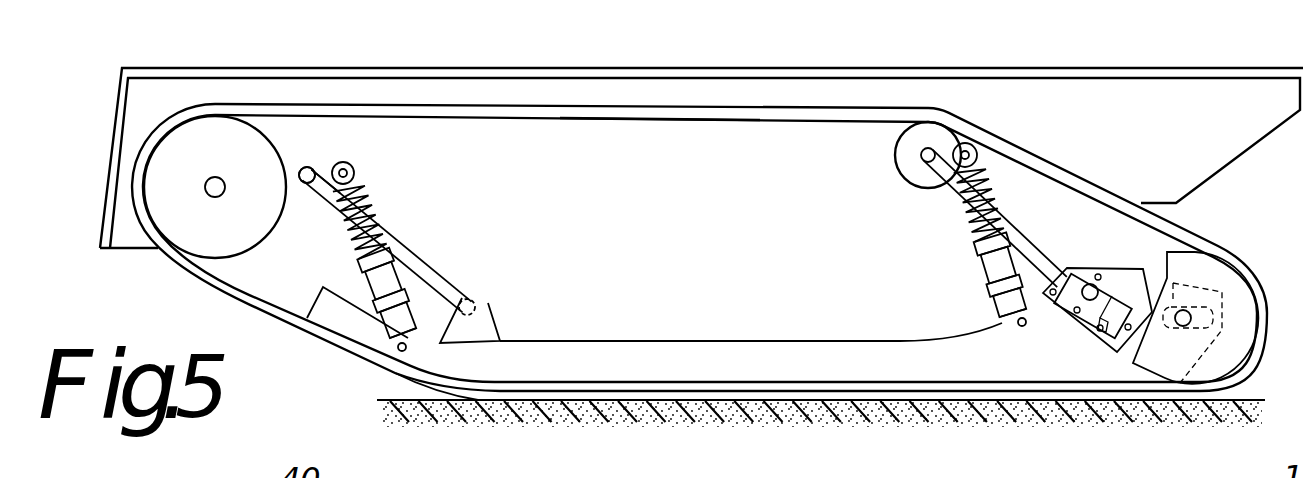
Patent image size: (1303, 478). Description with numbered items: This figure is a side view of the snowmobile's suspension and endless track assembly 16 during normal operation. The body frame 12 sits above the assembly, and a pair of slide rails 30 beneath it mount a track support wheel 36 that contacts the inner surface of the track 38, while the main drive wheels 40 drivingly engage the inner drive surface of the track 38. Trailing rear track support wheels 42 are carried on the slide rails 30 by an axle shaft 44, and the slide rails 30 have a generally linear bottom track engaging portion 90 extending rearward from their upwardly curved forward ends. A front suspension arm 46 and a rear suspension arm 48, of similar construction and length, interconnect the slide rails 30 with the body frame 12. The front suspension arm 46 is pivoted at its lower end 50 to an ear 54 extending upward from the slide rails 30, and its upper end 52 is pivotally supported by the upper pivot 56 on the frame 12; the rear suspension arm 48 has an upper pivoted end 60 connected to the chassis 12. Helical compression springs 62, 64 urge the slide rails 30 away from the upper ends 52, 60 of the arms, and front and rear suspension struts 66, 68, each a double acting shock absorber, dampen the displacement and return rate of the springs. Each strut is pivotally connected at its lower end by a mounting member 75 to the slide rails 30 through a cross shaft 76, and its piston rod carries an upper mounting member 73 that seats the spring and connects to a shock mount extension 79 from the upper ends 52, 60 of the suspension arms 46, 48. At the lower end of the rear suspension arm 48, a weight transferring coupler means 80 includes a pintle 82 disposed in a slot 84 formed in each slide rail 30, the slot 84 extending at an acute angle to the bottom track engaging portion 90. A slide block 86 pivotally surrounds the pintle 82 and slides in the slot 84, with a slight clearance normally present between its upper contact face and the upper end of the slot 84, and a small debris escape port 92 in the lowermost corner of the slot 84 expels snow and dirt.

The body frame 12 is at (1170, 72).
The suspension and endless track assembly 16 is at (228, 288).
The slide rails 30 is at (713, 340).
The track support wheel 36 is at (903, 167).
The track 38 is at (667, 113).
The main drive wheels 40 is at (165, 158).
The trailing rear track support wheels 42 is at (1228, 277).
The axle shaft 44 is at (1190, 325).
The front suspension arm 46 is at (393, 245).
The rear suspension arm 48 is at (1007, 222).
The lower end pivot 50 is at (482, 300).
The upper end of the front suspension arm 52 is at (313, 167).
The ear 54 is at (487, 318).
The upper pivot 56 is at (300, 181).
The upper pivoted end of the rear suspension arm 60 is at (921, 150).
The front helical compression spring 62 is at (373, 200).
The rear helical compression spring 64 is at (972, 220).
The front suspension strut 66 is at (377, 293).
The rear suspension strut 68 is at (997, 270).
The upper mounting member 73 is at (357, 173).
The lower mounting member 75 is at (407, 330).
The cross shaft 76 is at (399, 351).
The shock mount extension 79 is at (338, 184).
The weight transferring coupler means 80 is at (1068, 322).
The pintle 82 is at (1095, 285).
The slot 84 is at (1083, 313).
The slide block 86 is at (1072, 288).
The bottom track engaging portion 90 is at (800, 392).
The debris escape port 92 is at (1113, 345).